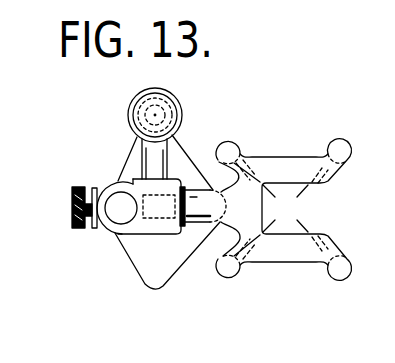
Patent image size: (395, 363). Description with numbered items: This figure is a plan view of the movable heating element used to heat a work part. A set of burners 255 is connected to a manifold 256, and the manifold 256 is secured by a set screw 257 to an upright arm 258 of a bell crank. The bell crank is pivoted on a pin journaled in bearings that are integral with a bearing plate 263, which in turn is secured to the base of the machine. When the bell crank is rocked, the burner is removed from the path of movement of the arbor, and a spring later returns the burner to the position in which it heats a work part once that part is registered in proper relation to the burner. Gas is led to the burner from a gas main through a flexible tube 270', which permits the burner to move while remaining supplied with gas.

The flexible tube 270' is at (179, 133).
The set of burners 255 is at (335, 177).
The manifold 256 is at (155, 234).
The set screw 257 is at (74, 230).
The upright arm 258 is at (122, 219).
The bearing plate 263 is at (167, 290).